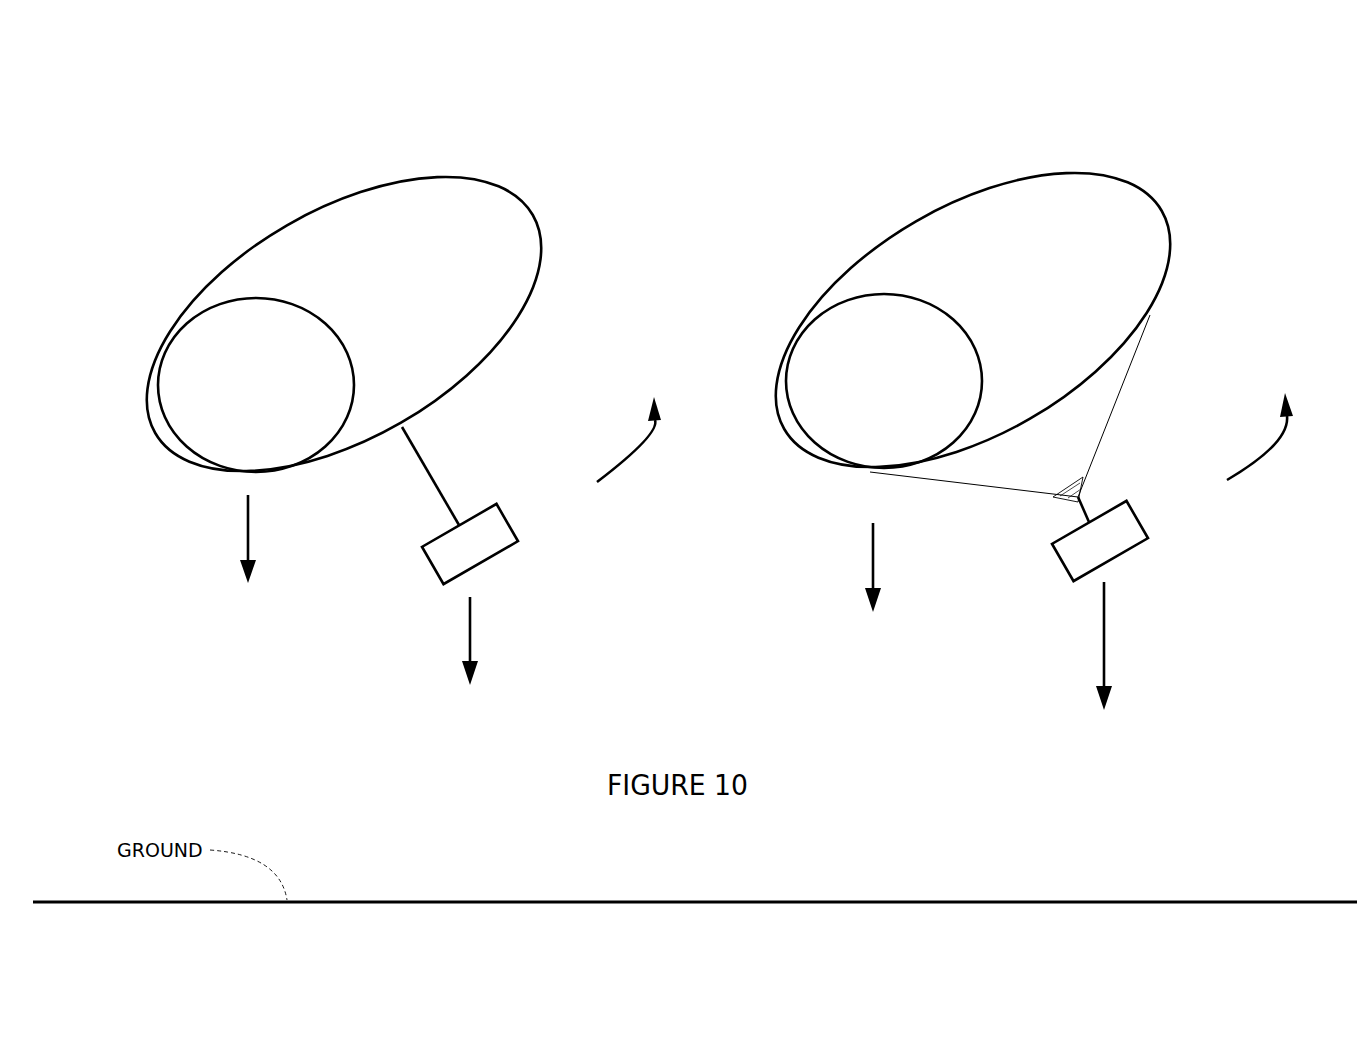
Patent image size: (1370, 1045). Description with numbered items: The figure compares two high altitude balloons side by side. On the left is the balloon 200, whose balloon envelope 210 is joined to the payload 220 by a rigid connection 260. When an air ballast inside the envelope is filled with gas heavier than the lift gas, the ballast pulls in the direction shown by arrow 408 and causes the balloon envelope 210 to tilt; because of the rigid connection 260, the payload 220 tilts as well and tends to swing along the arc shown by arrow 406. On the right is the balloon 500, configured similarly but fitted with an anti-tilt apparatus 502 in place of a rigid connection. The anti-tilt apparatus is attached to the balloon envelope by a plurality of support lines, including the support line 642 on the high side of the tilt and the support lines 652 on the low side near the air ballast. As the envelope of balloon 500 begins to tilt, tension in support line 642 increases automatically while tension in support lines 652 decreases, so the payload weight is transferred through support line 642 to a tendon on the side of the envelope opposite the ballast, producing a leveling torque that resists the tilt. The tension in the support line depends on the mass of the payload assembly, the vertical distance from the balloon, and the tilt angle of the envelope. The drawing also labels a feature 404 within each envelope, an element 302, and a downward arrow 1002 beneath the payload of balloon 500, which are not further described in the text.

The balloon 200 is at (290, 140).
The balloon envelope 210 is at (197, 290).
The inner gas compartment 404 is at (173, 342).
The arrow 406 is at (245, 525).
The arrow 408 is at (647, 438).
The connection 260 is at (423, 462).
The payload 220 is at (513, 518).
The balloon 500 is at (990, 130).
The anti-tilt apparatus 502 is at (1060, 490).
The support line 642 is at (1092, 458).
The support lines 652 is at (1013, 492).
The attachment point 302 is at (1194, 435).
The resultant downward force on payload 1002 is at (1103, 638).